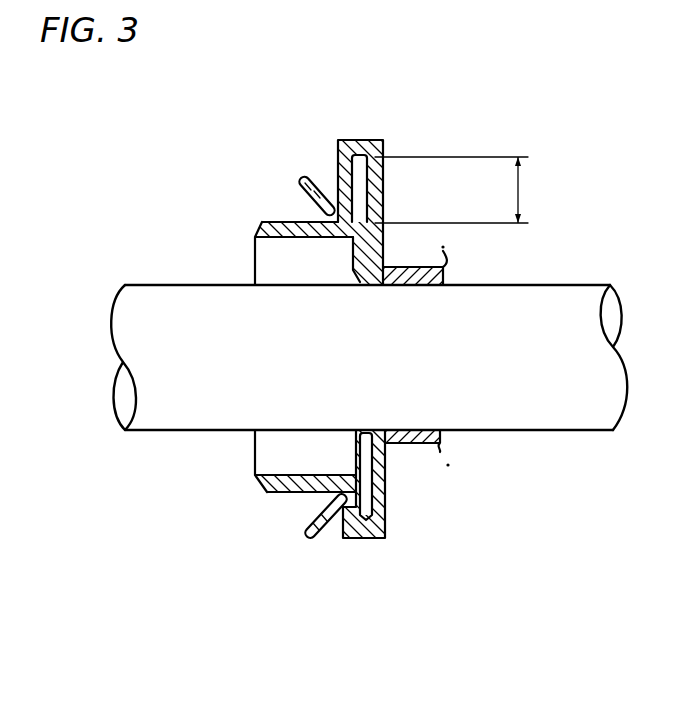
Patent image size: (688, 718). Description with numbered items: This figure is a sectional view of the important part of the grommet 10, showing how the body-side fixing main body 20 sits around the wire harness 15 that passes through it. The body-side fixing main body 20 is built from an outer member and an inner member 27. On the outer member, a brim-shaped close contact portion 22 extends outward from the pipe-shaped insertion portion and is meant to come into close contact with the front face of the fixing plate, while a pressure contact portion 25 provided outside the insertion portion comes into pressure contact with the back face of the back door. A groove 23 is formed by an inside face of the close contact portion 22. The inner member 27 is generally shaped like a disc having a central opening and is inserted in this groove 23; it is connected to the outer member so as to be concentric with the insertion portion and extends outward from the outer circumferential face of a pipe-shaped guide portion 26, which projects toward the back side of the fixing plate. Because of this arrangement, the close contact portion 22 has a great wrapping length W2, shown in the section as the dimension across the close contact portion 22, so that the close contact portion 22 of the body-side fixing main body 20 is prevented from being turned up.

The pipe holding structure 10 is at (452, 112).
The wire harness 15 is at (187, 431).
The body-side fixing main body 20 is at (322, 150).
The close contact portion 22 is at (373, 140).
The groove 23 is at (375, 512).
The pressure contact portion 25 is at (323, 542).
The guide portion 26 is at (280, 222).
The inner member 27 is at (357, 173).
The wrapping length W2 is at (464, 190).